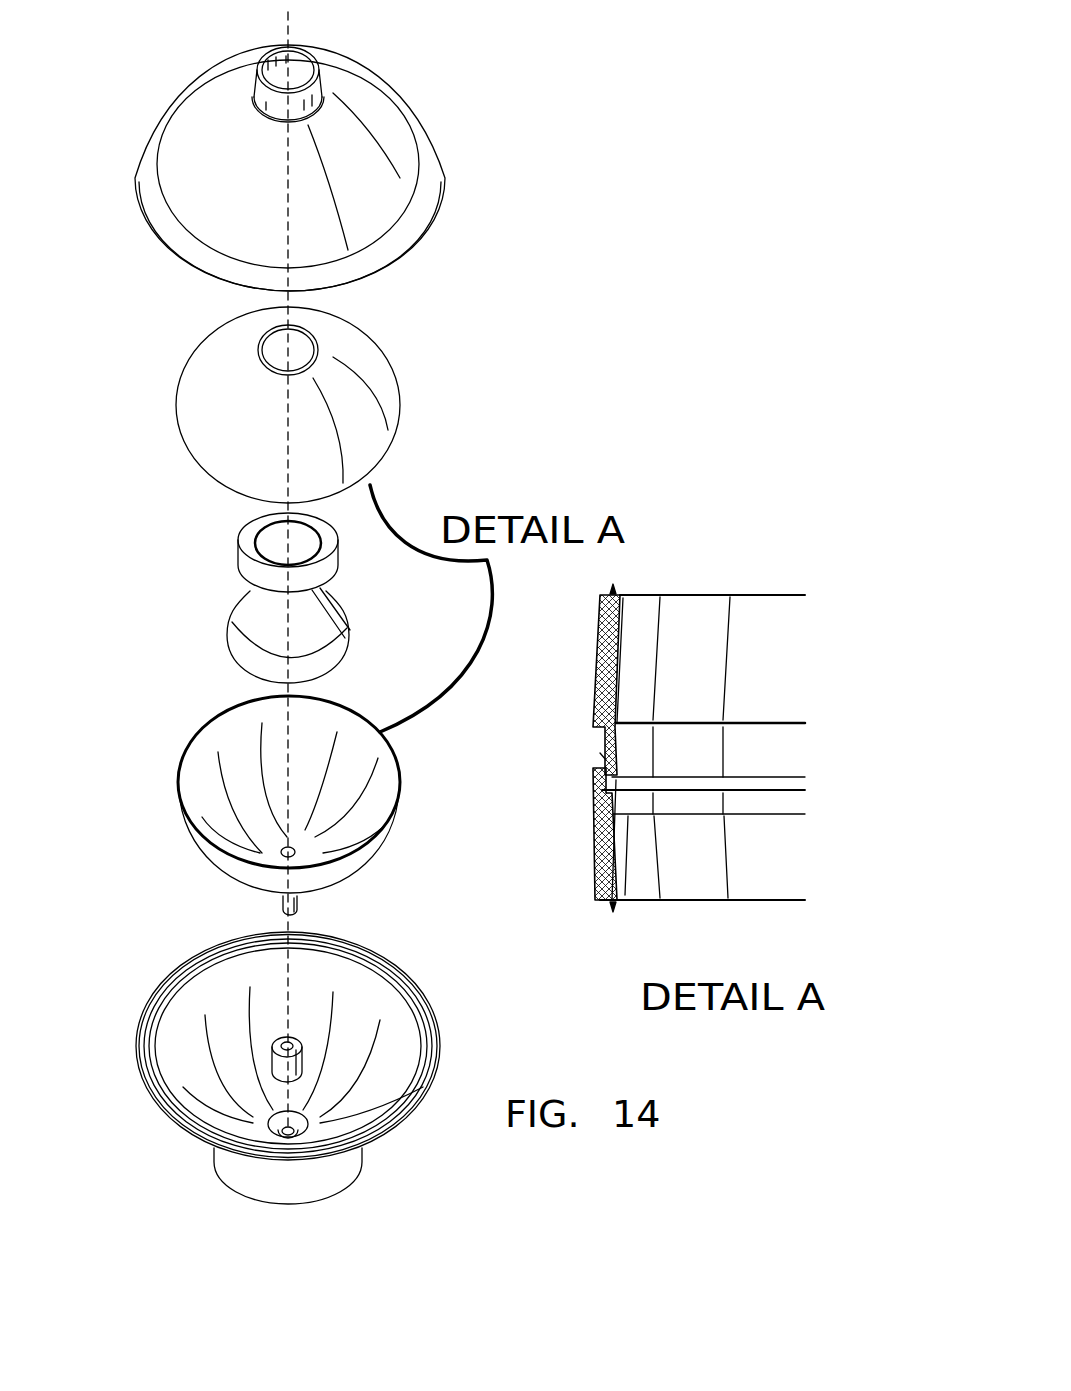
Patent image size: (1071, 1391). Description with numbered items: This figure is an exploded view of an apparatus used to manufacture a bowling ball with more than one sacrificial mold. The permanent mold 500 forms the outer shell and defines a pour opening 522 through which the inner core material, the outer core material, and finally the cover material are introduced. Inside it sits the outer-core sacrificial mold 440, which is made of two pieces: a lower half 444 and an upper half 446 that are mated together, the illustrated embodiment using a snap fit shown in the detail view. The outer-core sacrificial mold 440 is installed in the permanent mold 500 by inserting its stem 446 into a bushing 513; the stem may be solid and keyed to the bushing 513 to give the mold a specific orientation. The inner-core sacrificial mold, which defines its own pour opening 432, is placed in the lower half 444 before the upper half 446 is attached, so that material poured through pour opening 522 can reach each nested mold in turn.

The permanent mold 500 is at (400, 125).
The pour opening 522 is at (305, 82).
The outer-core sacrificial mold 440 is at (350, 327).
The upper half of outer-core sacrificial mold 446 is at (393, 390).
The lower half of outer-core sacrificial mold 444 is at (377, 855).
The pour opening 432 is at (292, 548).
The bushing 513 is at (278, 1035).